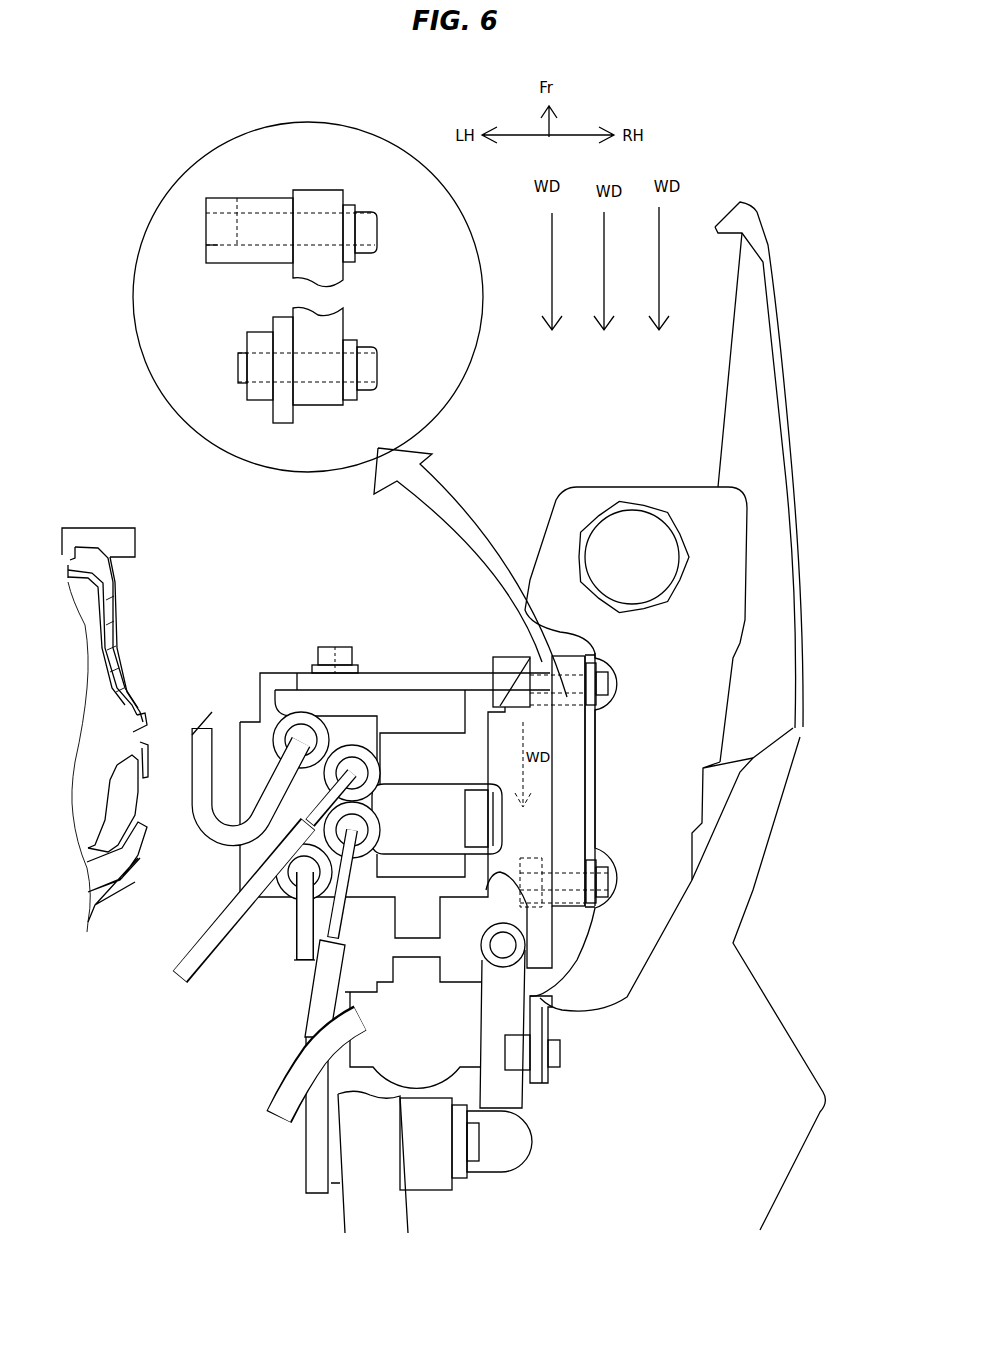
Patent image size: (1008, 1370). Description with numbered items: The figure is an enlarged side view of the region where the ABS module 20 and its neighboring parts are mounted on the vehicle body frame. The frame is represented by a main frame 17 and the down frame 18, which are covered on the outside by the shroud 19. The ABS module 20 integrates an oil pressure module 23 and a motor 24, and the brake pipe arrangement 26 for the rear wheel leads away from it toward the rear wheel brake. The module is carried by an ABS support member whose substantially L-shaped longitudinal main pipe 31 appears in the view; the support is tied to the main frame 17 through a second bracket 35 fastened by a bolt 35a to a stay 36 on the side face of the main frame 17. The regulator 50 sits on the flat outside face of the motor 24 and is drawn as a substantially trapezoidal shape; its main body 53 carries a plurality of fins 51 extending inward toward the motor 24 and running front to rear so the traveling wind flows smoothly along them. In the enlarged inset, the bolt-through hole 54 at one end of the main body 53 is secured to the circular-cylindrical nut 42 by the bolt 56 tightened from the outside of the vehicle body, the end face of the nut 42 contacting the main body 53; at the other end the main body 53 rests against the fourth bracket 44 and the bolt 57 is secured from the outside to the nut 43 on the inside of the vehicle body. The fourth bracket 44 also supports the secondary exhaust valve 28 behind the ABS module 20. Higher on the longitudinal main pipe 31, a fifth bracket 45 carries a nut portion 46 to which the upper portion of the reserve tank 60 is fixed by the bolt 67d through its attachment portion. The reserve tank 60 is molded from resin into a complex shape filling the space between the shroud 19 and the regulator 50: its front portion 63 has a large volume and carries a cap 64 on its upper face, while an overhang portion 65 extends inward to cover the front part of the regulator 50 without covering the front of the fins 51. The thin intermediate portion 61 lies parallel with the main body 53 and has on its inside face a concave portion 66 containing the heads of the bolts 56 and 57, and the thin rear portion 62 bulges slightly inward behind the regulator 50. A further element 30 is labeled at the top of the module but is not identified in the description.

The main frame 17 is at (345, 1213).
The down frame 18 is at (125, 614).
The shroud 19 is at (783, 323).
The ABS module 20 is at (462, 733).
The oil pressure module 23 is at (352, 724).
The motor 24 is at (430, 745).
The brake pipe arrangement for the rear wheel 26 is at (306, 1163).
The secondary exhaust valve 28 is at (530, 1112).
The mounting bolt 30 is at (373, 672).
The longitudinal main pipe 31 is at (525, 955).
The second bracket 35 is at (520, 1168).
The bolt 35a is at (480, 1152).
The stay 36 is at (430, 1182).
The nut 42 is at (507, 678).
The nut 43 is at (255, 345).
The fourth bracket 44 is at (545, 930).
The fifth bracket 45 is at (540, 1000).
The nut portion 46 is at (548, 1072).
The regulator 50 is at (573, 812).
The fins 51 is at (560, 790).
The main body 53 is at (317, 198).
The bolt-through hole 54 is at (218, 245).
The bolt 56 is at (612, 700).
The bolt 57 is at (612, 885).
The reserve tank 60 is at (778, 607).
The intermediate portion 61 is at (693, 748).
The rear portion 62 is at (625, 932).
The front portion 63 is at (697, 517).
The cap 64 is at (617, 530).
The overhang portion 65 is at (550, 563).
The concave portion 66 is at (600, 655).
The bolt 67d is at (560, 1052).